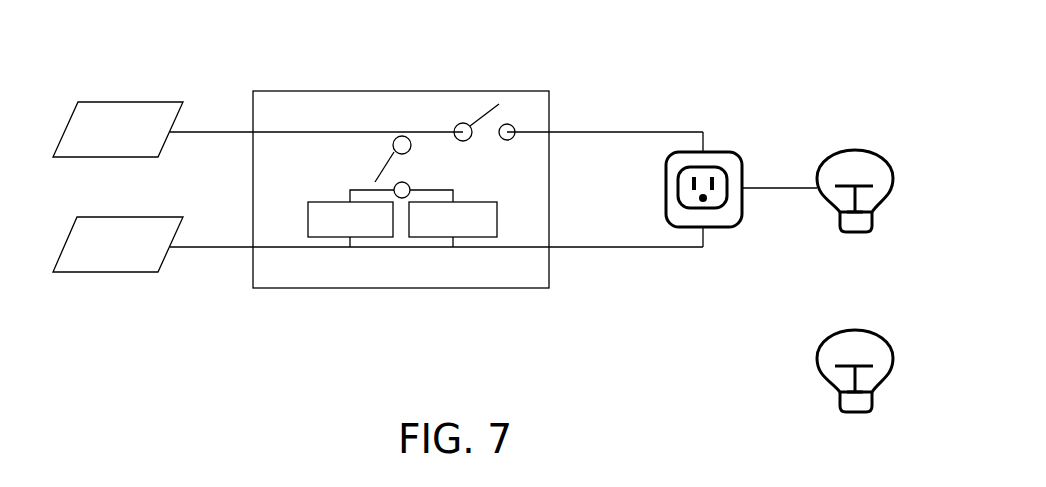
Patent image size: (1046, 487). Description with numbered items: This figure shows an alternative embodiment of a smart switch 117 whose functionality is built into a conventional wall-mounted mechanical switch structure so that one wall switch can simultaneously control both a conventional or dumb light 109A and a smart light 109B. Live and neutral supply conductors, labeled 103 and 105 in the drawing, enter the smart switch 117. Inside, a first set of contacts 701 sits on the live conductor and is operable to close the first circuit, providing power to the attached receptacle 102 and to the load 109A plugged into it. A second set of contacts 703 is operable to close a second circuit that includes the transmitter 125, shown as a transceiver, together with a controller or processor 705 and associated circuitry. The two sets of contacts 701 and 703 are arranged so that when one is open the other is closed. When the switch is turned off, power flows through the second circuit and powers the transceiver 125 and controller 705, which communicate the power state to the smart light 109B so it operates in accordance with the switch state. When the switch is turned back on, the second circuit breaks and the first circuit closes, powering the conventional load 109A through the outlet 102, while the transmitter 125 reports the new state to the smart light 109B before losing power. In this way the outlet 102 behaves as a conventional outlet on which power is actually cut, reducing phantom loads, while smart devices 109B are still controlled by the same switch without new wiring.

The live line 103 is at (205, 130).
The neutral line 105 is at (205, 249).
The smart switch 117 is at (534, 91).
The first set of contacts 701 is at (472, 124).
The second set of contacts 703 is at (384, 163).
The controller 705 is at (375, 238).
The transmitter 125 is at (472, 238).
The receptacle 102 is at (726, 152).
The conventional light 109A is at (871, 131).
The smart light 109B is at (871, 313).